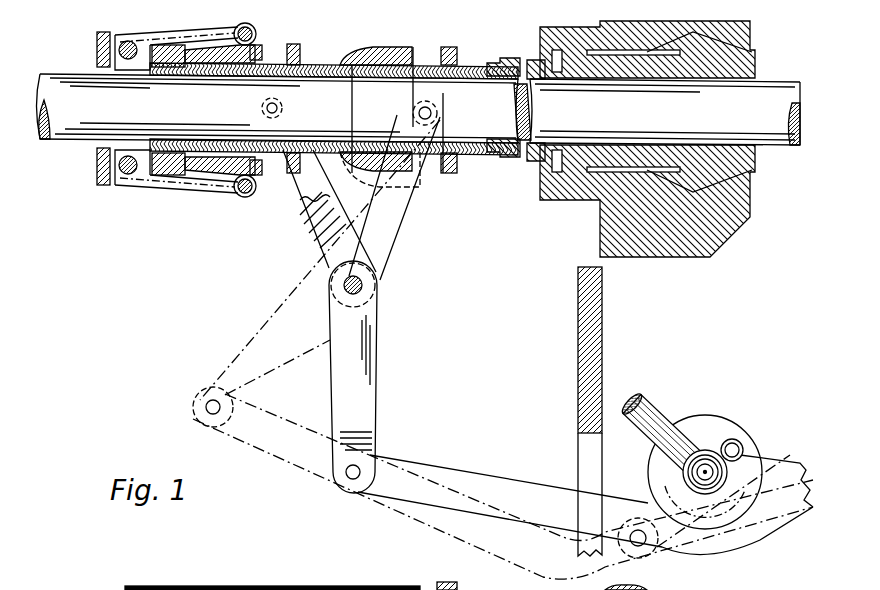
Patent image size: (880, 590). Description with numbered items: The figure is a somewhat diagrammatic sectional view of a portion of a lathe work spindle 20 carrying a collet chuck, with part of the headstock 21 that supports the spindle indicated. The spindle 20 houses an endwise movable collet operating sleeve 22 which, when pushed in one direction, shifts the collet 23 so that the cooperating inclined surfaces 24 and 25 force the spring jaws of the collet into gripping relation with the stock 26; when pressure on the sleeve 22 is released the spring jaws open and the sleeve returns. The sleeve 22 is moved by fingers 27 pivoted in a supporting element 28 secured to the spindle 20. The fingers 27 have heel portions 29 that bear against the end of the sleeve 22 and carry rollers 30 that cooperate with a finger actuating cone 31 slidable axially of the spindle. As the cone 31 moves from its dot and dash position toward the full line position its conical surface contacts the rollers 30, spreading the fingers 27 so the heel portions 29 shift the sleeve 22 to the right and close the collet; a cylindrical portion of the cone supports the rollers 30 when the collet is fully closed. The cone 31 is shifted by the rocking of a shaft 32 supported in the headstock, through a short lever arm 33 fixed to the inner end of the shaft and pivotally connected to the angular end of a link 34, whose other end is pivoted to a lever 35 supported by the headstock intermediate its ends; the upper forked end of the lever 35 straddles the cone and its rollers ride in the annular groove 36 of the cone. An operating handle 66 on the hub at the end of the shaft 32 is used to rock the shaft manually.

The work spindle 20 is at (330, 63).
The headstock 21 is at (594, 352).
The collet operating sleeve 22 is at (303, 62).
The collet 23 is at (610, 67).
The inclined surface 24 is at (753, 55).
The inclined surface 25 is at (738, 50).
The stock 26 is at (765, 133).
The fingers 27 is at (172, 182).
The supporting element 28 is at (98, 40).
The heel portions 29 is at (97, 150).
The rollers 30 is at (252, 186).
The finger actuating cone 31 is at (420, 100).
The shaft 32 is at (645, 588).
The lever arm 33 is at (711, 440).
The link 34 is at (432, 517).
The lever 35 is at (280, 325).
The annular groove 36 is at (434, 62).
The operating handle 66 is at (634, 385).